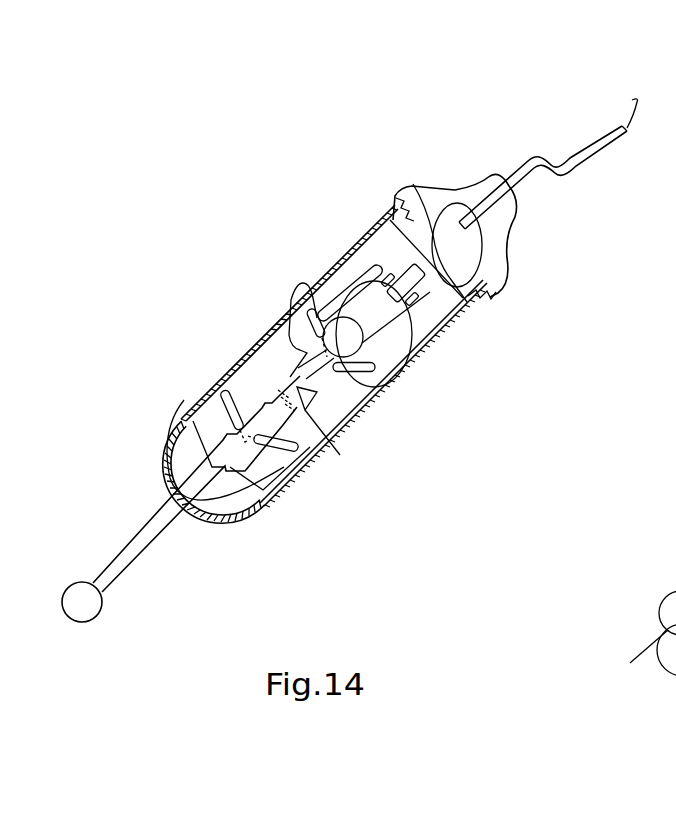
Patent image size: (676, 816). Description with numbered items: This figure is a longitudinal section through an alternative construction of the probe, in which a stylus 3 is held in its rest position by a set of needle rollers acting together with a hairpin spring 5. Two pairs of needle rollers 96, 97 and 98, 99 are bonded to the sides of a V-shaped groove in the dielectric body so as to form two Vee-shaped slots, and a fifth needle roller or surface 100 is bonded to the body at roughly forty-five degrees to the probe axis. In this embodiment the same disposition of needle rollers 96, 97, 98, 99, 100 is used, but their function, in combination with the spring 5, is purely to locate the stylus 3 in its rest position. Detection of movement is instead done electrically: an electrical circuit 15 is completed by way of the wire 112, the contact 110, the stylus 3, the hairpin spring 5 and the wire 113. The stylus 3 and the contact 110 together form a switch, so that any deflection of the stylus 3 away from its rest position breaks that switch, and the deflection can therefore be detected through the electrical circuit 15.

The stylus 3 is at (143, 528).
The hairpin spring 5 is at (290, 337).
The electrical circuit 15 is at (560, 160).
The needle roller 96 is at (313, 297).
The needle roller 97 is at (223, 398).
The needle roller 98 is at (397, 372).
The needle roller 99 is at (298, 490).
The fifth needle roller 100 is at (348, 296).
The contact 110 is at (320, 452).
The wire 112 is at (445, 253).
The wire 113 is at (432, 192).